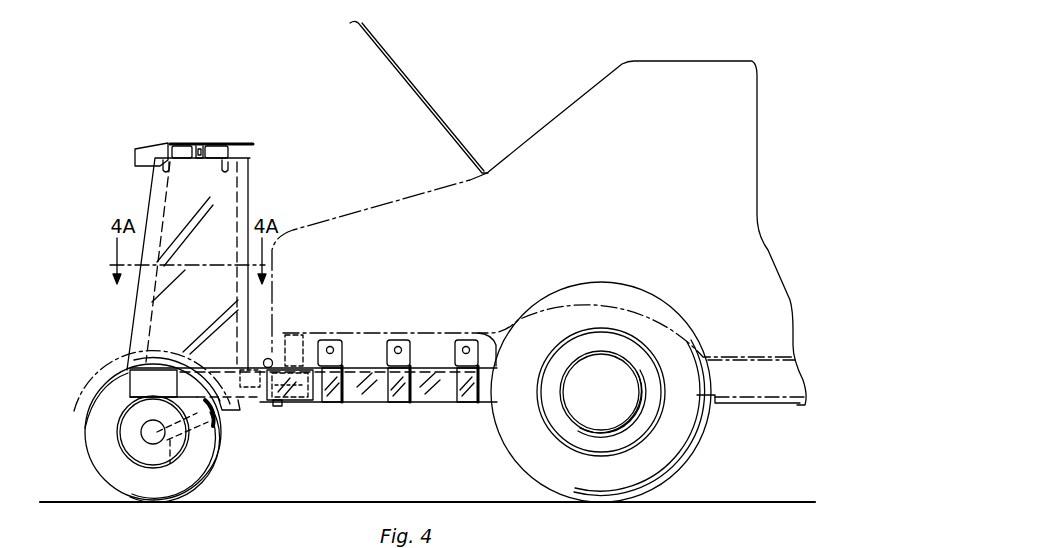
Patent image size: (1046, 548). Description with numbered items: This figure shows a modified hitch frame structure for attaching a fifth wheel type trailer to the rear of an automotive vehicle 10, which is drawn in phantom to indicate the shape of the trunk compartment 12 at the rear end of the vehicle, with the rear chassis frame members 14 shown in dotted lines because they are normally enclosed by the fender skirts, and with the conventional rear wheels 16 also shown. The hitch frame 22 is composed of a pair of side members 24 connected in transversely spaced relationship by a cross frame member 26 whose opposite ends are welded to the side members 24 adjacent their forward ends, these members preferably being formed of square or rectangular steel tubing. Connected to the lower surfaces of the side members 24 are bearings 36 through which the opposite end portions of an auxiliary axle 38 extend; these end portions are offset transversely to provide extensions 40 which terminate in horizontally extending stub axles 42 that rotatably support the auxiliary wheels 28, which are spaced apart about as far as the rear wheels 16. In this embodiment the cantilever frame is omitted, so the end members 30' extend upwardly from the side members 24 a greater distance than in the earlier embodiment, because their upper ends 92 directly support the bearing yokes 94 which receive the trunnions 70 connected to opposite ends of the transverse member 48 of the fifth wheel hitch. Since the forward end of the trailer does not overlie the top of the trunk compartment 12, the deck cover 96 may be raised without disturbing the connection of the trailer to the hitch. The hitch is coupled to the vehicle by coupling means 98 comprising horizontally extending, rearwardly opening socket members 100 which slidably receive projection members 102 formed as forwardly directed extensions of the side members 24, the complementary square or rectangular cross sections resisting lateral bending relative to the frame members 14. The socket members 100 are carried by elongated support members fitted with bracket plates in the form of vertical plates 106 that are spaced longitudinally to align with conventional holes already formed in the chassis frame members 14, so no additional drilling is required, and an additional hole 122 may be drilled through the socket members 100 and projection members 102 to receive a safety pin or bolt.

The automotive vehicle 10 is at (536, 150).
The trunk compartment 12 is at (405, 278).
The rear chassis frame members 14 is at (396, 335).
The rear wheels 16 is at (530, 456).
The hitch frame 22 is at (140, 359).
The side members 24 is at (88, 427).
The cross frame member 26 is at (226, 378).
The auxiliary wheels 28 is at (206, 474).
The end members 30' is at (227, 264).
The bearings 36 is at (241, 404).
The auxiliary axle 38 is at (216, 412).
The extensions 40 is at (171, 460).
The stub axles 42 is at (148, 444).
The transverse member 48 is at (185, 147).
The trunnions 70 is at (200, 145).
The upper ends 92 is at (234, 148).
The bearing yokes 94 is at (193, 150).
The deck cover 96 is at (422, 88).
The coupling means 98 is at (322, 402).
The socket members 100 is at (300, 410).
The projection members 102 is at (300, 335).
The vertical plates 106 is at (341, 400).
The hole 122 is at (278, 407).